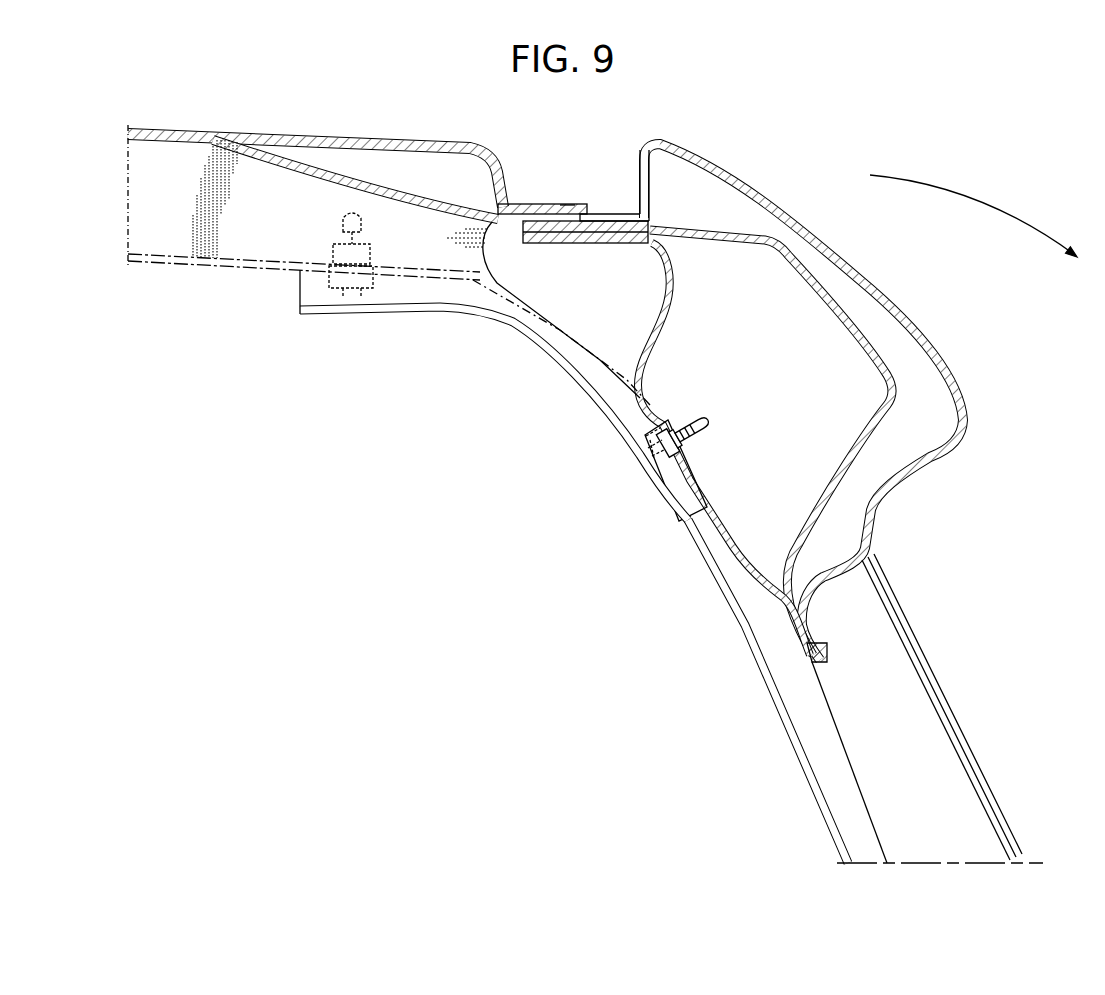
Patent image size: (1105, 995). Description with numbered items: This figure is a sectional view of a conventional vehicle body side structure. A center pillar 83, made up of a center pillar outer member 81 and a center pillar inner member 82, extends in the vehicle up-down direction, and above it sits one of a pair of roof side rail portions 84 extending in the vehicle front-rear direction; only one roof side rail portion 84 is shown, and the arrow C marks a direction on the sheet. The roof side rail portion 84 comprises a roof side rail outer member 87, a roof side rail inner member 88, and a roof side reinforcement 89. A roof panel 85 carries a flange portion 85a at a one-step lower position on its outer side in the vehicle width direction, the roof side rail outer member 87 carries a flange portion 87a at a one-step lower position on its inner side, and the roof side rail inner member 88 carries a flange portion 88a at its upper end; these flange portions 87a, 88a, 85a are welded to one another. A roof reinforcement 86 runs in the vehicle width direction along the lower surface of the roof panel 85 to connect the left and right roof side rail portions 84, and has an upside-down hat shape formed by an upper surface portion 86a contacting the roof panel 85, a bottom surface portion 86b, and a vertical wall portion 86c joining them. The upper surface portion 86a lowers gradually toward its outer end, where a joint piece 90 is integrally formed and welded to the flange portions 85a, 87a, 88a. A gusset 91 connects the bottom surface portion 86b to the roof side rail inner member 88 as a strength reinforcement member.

The center pillar outer member 81 is at (937, 740).
The center pillar inner member 82 is at (823, 767).
The center pillar 83 is at (935, 660).
The roof side rail portion 84 is at (872, 270).
The roof panel 85 is at (358, 140).
The flange portion 85a is at (543, 204).
The roof reinforcement 86 is at (166, 264).
The upper surface portion 86a is at (400, 198).
The bottom surface portion 86b is at (243, 263).
The vertical wall portion 86c is at (137, 190).
The roof side rail outer member 87 is at (802, 222).
The flange portion 87a is at (612, 214).
The roof side rail inner member 88 is at (657, 330).
The flange portion 88a is at (565, 243).
The roof side reinforcement 89 is at (857, 342).
The joint piece 90 is at (567, 203).
The gusset 91 is at (550, 357).
The vehicle outward direction C is at (988, 200).